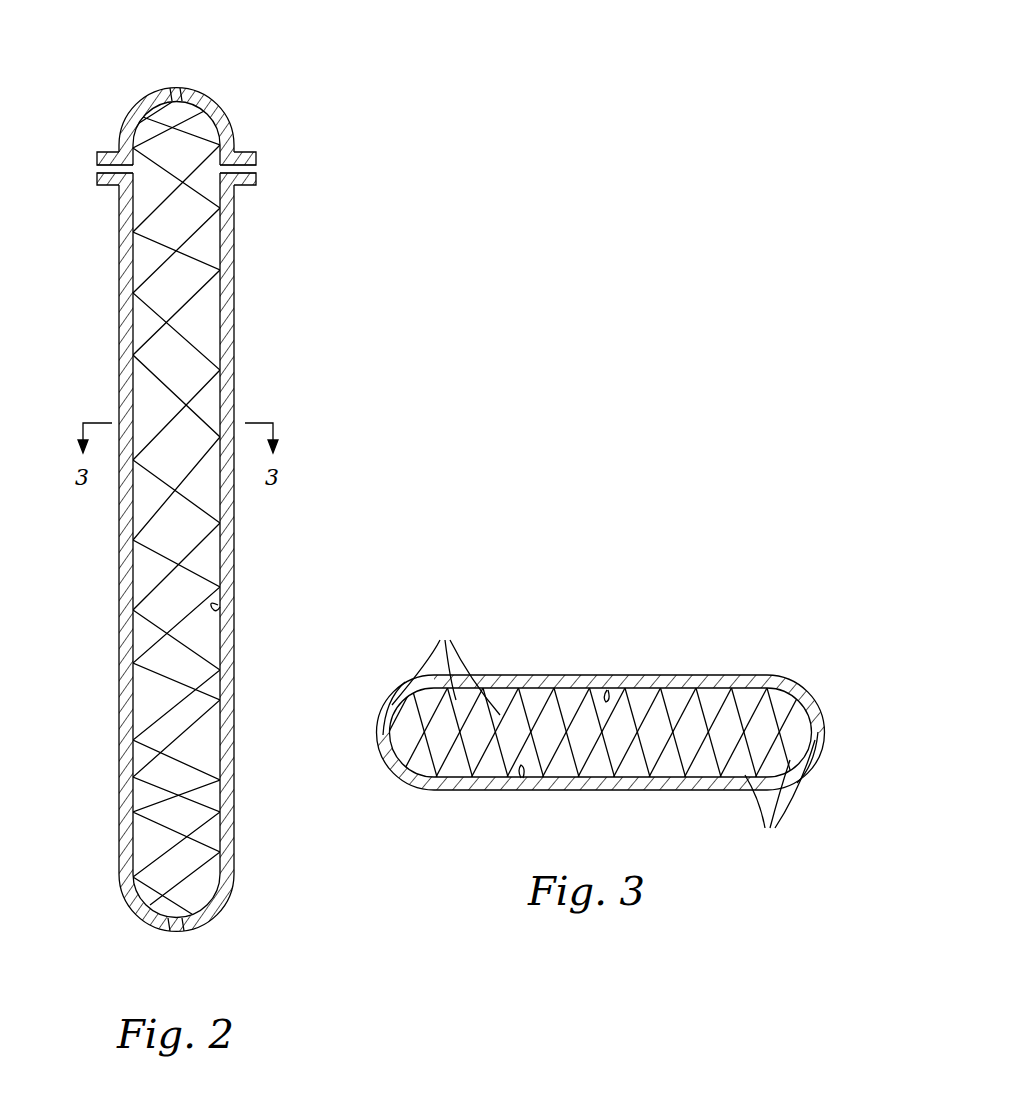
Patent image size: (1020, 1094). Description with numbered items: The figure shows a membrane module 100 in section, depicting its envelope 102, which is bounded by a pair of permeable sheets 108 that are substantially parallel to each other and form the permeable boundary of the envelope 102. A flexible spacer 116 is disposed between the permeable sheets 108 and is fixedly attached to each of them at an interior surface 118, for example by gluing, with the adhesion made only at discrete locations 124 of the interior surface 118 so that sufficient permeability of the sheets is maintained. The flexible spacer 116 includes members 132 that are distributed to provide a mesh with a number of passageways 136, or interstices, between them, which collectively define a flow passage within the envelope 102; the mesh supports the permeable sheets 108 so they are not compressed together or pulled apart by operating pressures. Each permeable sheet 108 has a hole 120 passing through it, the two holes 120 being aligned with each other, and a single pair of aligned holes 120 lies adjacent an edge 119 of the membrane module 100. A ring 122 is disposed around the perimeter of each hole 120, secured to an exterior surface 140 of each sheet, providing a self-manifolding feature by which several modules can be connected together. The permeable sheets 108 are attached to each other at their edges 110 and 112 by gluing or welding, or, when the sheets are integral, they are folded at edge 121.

In FIG. 2, the membrane module 100 is at (305, 60).
In FIG. 3, the membrane module 100 is at (658, 617).
In FIG. 2, the envelope 102 is at (266, 254).
In FIG. 3, the envelope 102 is at (551, 654).
In FIG. 2, the permeable sheets 108 is at (119, 312).
In FIG. 3, the permeable sheets 108 is at (644, 680).
In FIG. 3, the edge 110 is at (384, 725).
In FIG. 2, the edge 112 is at (188, 96).
In FIG. 2, the flexible spacer 116 is at (212, 542).
In FIG. 3, the flexible spacer 116 is at (468, 762).
In FIG. 2, the interior surface 118 is at (218, 605).
In FIG. 3, the interior surface 118 is at (607, 690).
In FIG. 2, the edge 119 is at (163, 91).
In FIG. 2, the hole 120 is at (112, 169).
In FIG. 2, the edge 121 is at (165, 936).
In FIG. 2, the ring 122 is at (100, 153).
In FIG. 2, the locations 124 is at (232, 140).
In FIG. 3, the locations 124 is at (784, 676).
In FIG. 2, the members 132 is at (192, 648).
In FIG. 3, the members 132 is at (756, 697).
In FIG. 3, the passageways 136 is at (600, 733).
In FIG. 2, the exterior surface 140 is at (118, 150).